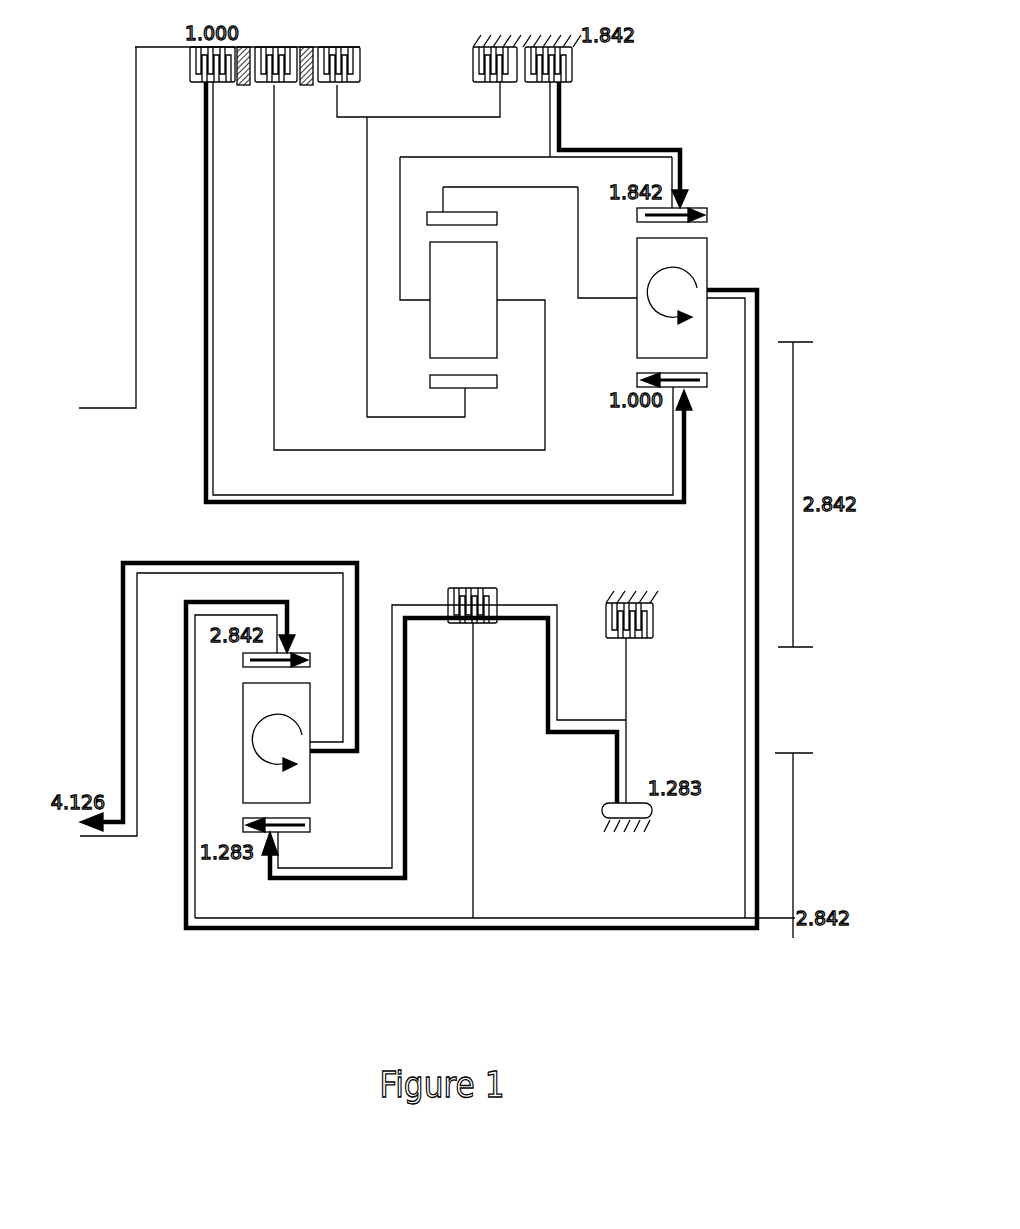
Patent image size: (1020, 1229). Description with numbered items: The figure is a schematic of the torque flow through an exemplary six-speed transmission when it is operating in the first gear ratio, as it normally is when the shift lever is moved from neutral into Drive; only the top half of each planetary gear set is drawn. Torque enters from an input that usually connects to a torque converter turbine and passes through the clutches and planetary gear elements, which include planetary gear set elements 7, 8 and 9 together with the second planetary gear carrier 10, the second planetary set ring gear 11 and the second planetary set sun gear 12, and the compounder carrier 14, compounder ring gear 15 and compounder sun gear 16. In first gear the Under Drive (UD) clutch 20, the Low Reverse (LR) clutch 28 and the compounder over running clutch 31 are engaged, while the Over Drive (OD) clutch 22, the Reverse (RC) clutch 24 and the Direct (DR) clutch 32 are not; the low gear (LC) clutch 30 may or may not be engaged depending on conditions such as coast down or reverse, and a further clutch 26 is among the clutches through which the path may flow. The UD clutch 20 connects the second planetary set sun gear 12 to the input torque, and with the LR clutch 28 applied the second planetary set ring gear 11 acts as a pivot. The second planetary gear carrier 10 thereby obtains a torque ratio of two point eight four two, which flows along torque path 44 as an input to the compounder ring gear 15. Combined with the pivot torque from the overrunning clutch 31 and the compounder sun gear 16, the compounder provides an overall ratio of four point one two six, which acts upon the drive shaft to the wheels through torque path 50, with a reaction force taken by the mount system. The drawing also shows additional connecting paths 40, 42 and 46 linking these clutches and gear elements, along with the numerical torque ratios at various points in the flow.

The planetary gear set element 7 is at (497, 218).
The planetary gear set element 8 is at (497, 335).
The planetary gear set element 9 is at (497, 380).
The second planetary gear carrier 10 is at (707, 272).
The second planetary set ring gear 11 is at (707, 215).
The second planetary set sun gear 12 is at (707, 385).
The compounder carrier 14 is at (310, 770).
The compounder ring gear 15 is at (310, 660).
The compounder sun gear 16 is at (310, 825).
The Under Drive (UD) clutch 20 is at (190, 80).
The Over Drive (OD) clutch 22 is at (258, 85).
The Reverse (RC) clutch 24 is at (318, 85).
The clutch 26 is at (473, 77).
The Low Reverse (LR) clutch 28 is at (537, 82).
The low gear (LC) clutch 30 is at (653, 633).
The compounder over running clutch 31 is at (652, 810).
The Direct (DR) clutch 32 is at (495, 622).
The first shaft 40 is at (206, 438).
The input shaft 42 is at (637, 148).
The torque path 44 is at (518, 930).
The connecting shaft 46 is at (527, 612).
The torque path 50 is at (120, 707).